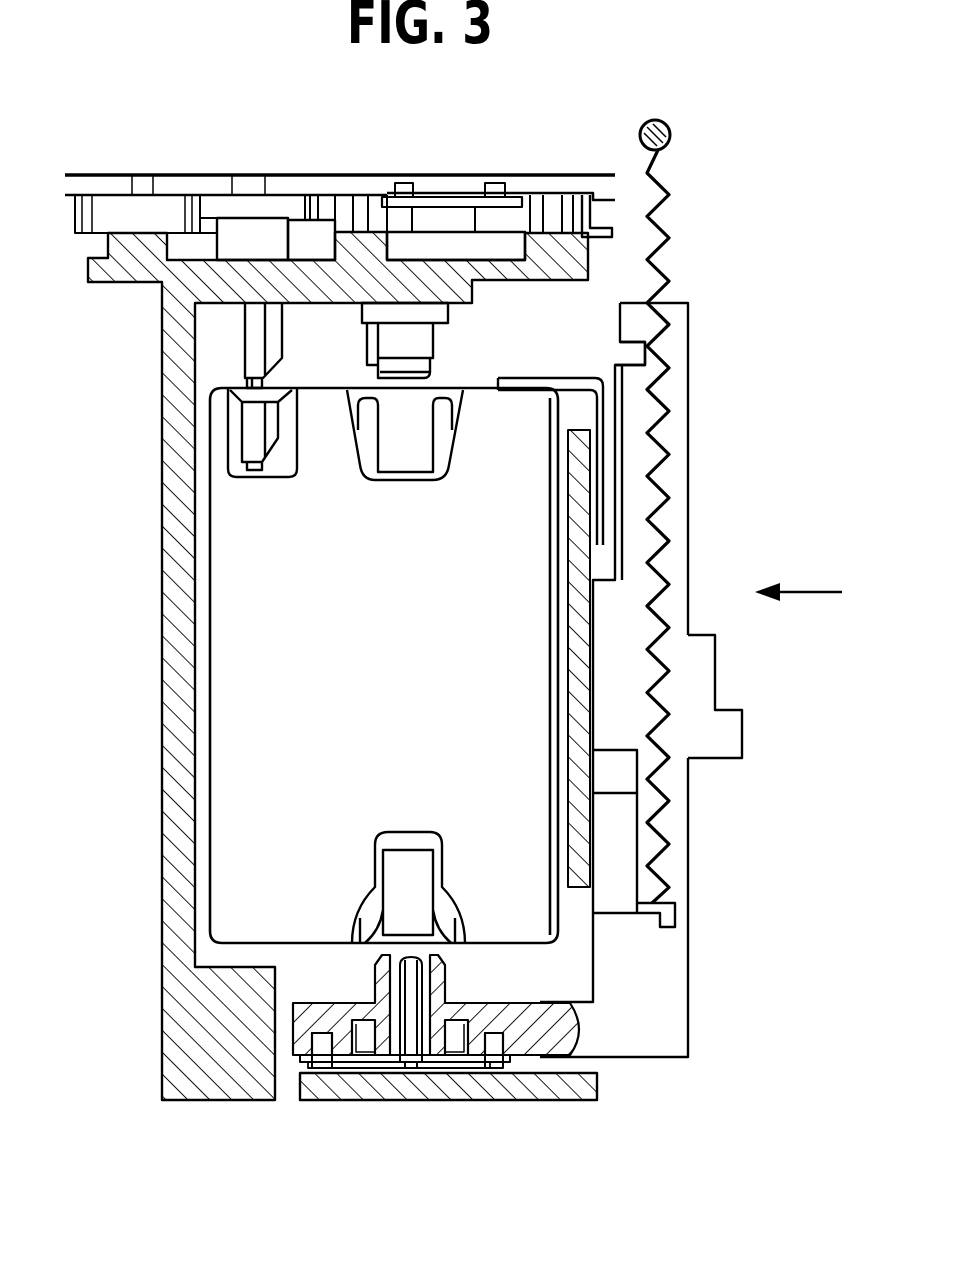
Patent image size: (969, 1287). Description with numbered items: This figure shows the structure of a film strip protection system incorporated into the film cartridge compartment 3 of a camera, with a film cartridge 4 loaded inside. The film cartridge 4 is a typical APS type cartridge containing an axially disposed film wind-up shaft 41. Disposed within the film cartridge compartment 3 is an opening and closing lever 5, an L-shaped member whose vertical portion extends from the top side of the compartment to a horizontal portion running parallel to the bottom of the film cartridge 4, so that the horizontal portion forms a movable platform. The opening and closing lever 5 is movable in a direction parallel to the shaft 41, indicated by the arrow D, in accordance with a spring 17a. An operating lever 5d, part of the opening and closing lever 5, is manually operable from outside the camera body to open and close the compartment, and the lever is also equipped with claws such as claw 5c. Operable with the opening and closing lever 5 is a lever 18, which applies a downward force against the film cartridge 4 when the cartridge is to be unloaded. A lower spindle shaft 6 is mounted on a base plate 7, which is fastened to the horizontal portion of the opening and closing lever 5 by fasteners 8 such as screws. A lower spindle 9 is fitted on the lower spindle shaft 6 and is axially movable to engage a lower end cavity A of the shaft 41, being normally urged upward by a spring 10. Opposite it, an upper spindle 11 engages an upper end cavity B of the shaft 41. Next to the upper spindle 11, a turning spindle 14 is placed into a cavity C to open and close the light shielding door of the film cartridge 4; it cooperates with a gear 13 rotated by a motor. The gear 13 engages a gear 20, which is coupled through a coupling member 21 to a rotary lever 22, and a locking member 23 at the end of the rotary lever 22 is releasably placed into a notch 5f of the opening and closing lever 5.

The film cartridge compartment 3 is at (160, 800).
The film cartridge 4 is at (233, 512).
The opening and closing lever 5 is at (673, 993).
The claw 5c is at (620, 845).
The operating lever 5d is at (725, 733).
The notch 5f is at (640, 350).
The lower spindle shaft 6 is at (408, 1043).
The base plate 7 is at (477, 1060).
The fasteners 8 is at (497, 1048).
The lower spindle 9 is at (370, 1037).
The spring 10 is at (423, 1052).
The upper spindle 11 is at (418, 345).
The gear 13 is at (237, 237).
The turning spindle 14 is at (255, 337).
The spring 17a is at (660, 226).
The lever 18 is at (567, 374).
The gear 20 is at (328, 212).
The coupling member 21 is at (425, 330).
The rotary lever 22 is at (530, 205).
The locking member 23 is at (607, 230).
The film wind-up shaft 41 is at (417, 835).
The lower end cavity A is at (432, 868).
The upper end cavity B is at (425, 455).
The cavity C is at (255, 410).
The direction D is at (798, 574).